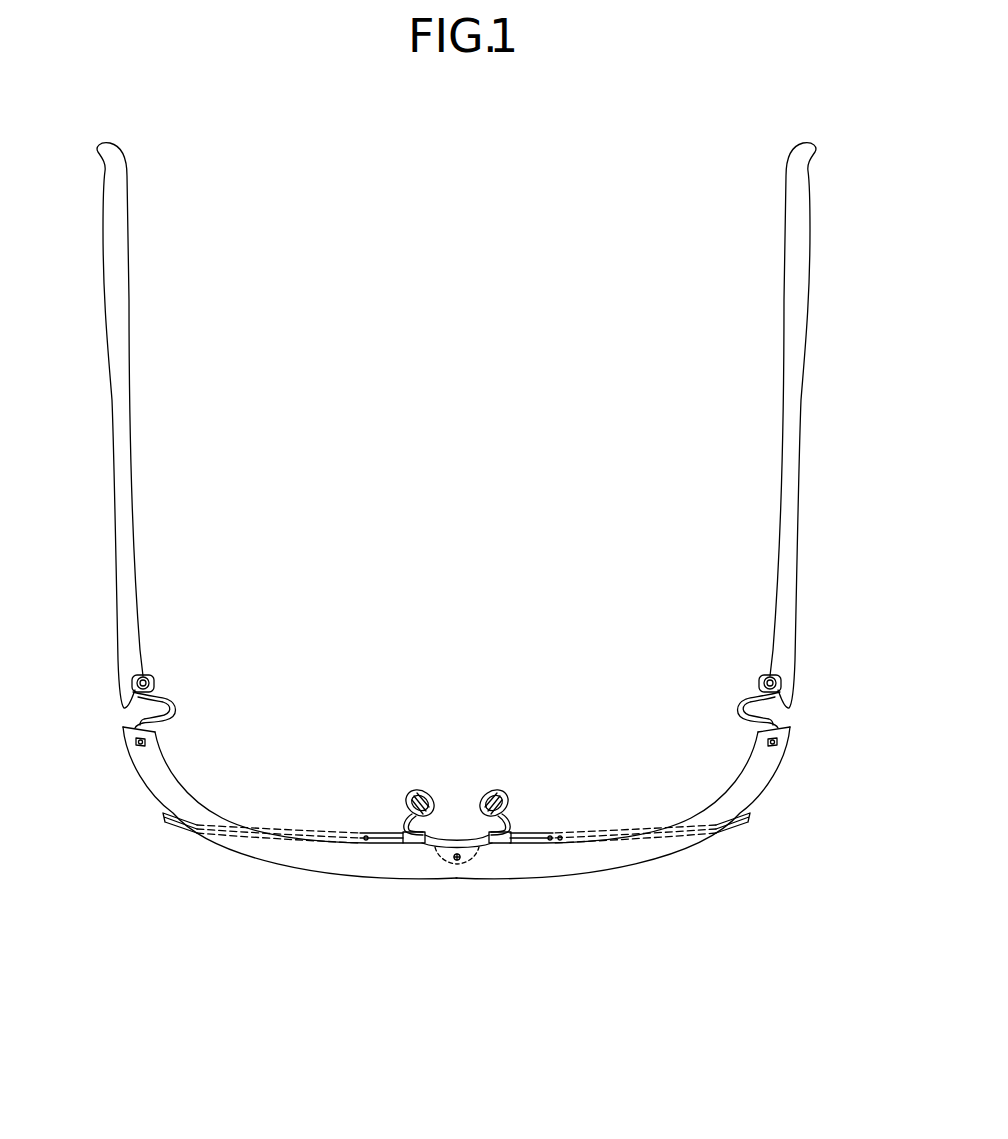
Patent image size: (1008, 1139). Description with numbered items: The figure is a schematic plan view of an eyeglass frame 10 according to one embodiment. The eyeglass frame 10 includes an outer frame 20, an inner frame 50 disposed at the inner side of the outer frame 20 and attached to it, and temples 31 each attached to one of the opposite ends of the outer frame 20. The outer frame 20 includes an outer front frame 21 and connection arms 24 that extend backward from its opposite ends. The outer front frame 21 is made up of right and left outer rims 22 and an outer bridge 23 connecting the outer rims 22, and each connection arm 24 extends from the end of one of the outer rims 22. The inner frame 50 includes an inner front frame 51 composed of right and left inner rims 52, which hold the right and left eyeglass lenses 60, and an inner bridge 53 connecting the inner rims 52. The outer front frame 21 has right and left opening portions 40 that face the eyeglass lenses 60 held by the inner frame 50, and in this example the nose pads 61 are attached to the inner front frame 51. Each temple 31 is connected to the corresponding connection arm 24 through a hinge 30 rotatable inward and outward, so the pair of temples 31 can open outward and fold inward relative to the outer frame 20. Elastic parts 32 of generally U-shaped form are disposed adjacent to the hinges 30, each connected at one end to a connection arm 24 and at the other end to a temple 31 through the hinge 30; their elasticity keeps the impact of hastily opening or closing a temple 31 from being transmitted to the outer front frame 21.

The eyeglass frame 10 is at (325, 188).
The outer frame 20 is at (345, 995).
The outer front frame 21 is at (697, 945).
The outer rims 22 is at (627, 857).
The outer bridge 23 is at (468, 870).
The connection arms 24 is at (773, 760).
The hinge 30 is at (765, 680).
The temples 31 is at (795, 420).
The elastic parts 32 is at (740, 710).
The opening portions 40 is at (747, 808).
The inner frame 50 is at (362, 668).
The inner front frame 51 is at (552, 722).
The inner rims 52 is at (540, 840).
The inner bridge 53 is at (447, 841).
The eyeglass lenses 60 is at (305, 830).
The nose pads 61 is at (432, 795).